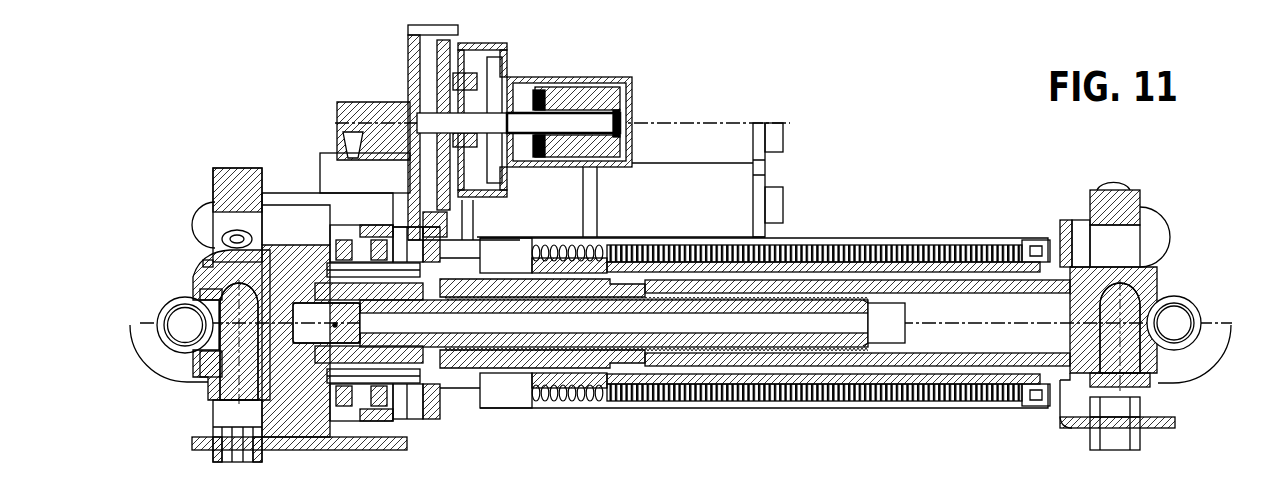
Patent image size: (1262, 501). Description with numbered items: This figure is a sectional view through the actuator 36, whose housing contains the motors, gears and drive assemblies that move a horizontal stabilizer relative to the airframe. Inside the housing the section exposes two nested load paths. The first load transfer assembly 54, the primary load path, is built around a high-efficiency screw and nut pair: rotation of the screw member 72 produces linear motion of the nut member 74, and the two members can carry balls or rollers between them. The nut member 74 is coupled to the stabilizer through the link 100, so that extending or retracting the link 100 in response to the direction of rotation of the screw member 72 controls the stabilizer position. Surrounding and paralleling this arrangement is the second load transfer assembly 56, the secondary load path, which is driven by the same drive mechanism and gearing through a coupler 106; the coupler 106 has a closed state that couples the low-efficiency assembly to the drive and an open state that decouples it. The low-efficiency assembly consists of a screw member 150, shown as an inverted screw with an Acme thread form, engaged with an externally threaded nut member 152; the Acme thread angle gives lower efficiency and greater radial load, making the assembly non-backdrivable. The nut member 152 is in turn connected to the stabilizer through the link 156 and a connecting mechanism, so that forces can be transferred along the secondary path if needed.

The actuator 36 is at (246, 84).
The first load transfer assembly 54 is at (151, 291).
The second load transfer assembly 56 is at (151, 242).
The screw member 72 is at (800, 340).
The nut member 74 is at (490, 370).
The link 100 is at (967, 363).
The coupler 106 is at (546, 54).
The screw member 150 is at (718, 408).
The threaded nut member 152 is at (603, 408).
The link 156 is at (897, 382).